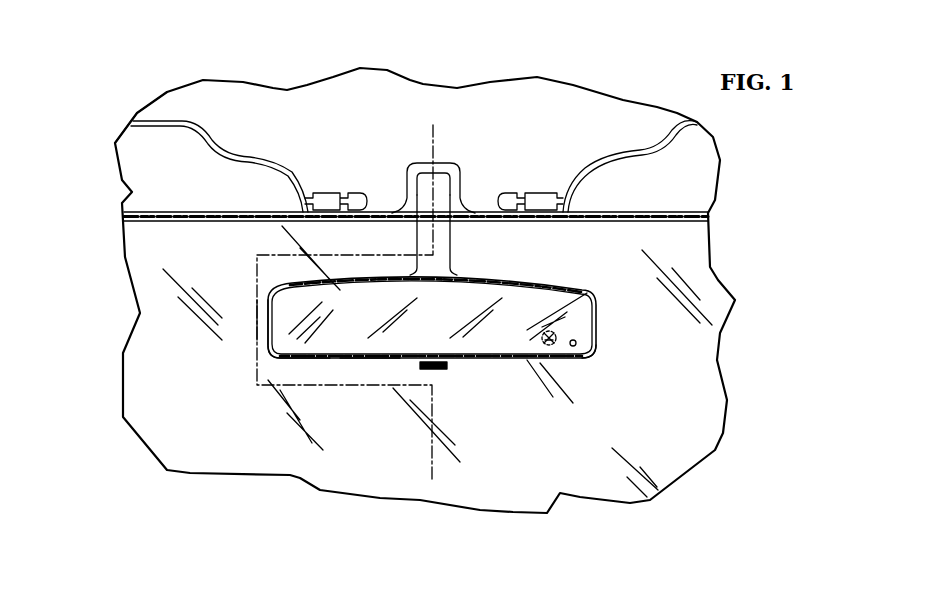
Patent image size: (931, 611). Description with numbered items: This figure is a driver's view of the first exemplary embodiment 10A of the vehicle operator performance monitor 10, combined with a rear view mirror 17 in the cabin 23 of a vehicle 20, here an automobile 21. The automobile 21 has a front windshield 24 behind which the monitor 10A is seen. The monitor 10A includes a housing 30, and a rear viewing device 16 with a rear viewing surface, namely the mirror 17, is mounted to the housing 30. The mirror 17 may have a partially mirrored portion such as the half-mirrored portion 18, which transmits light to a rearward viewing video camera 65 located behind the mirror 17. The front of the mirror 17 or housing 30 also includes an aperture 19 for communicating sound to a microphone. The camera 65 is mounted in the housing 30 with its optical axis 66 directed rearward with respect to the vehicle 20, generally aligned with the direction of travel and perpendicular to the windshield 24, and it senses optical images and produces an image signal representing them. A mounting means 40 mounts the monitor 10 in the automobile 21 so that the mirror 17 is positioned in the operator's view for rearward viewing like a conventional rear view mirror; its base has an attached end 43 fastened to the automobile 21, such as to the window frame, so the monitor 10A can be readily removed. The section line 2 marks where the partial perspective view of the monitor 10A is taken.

The line 2— 2 is at (433, 125).
The vehicle operator performance monitor 10 is at (240, 343).
The first exemplary embodiment of vehicle operator performance monitor 10A is at (233, 375).
The rear viewing device 16 is at (330, 343).
The rear view mirror 17 is at (366, 345).
The half-mirrored portion 18 is at (573, 347).
The aperture 19 is at (600, 353).
The vehicle 20 is at (127, 116).
The automobile 21 is at (101, 145).
The cabin 23 is at (122, 235).
The front windshield 24 is at (718, 282).
The housing 30 is at (586, 289).
The mounting means 40 is at (463, 240).
The attached end 43 is at (420, 186).
The rearward viewing video camera 65 is at (552, 352).
The optical axis 66 is at (541, 345).